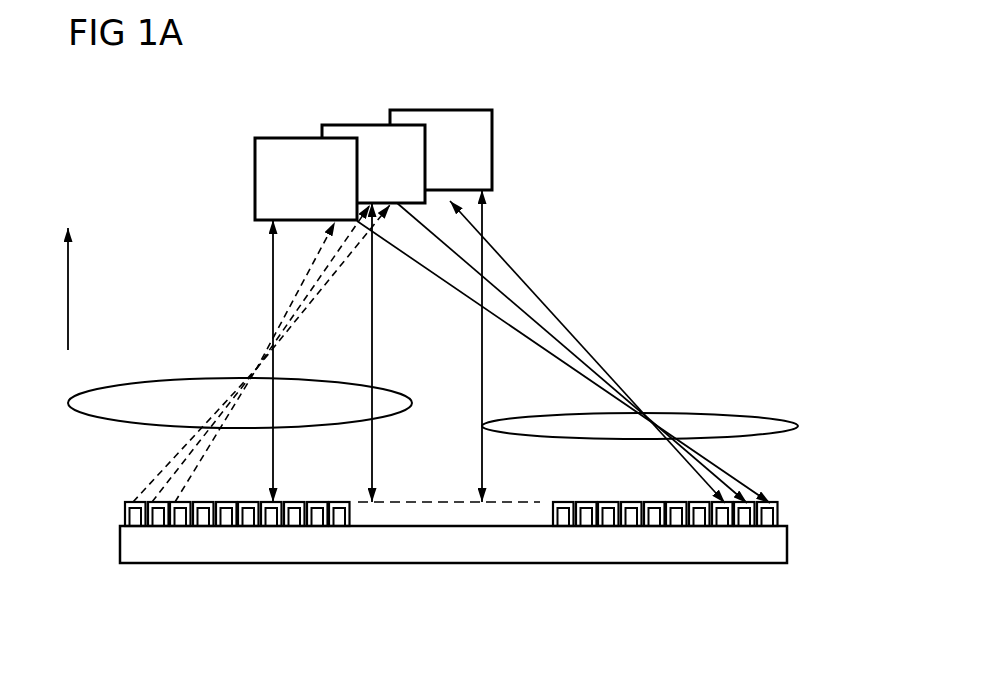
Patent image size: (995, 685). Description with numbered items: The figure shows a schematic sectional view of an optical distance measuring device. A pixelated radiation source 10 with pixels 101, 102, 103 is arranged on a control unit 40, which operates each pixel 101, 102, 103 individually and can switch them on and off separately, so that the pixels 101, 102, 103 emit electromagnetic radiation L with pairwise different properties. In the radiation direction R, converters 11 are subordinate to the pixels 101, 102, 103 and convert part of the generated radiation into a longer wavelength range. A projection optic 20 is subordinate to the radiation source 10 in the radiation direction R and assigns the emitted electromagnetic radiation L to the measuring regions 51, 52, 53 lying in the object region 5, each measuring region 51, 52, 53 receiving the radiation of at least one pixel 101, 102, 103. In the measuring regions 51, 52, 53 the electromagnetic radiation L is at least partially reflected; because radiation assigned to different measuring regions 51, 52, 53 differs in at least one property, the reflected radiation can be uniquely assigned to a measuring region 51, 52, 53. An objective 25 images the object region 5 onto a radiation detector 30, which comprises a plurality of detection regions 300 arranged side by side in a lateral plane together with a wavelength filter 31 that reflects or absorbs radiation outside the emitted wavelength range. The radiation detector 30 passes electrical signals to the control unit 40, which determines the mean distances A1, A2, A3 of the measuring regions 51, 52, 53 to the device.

The object region 5 is at (492, 56).
The measuring region 51 is at (307, 150).
The measuring region 52 is at (375, 133).
The measuring region 53 is at (442, 123).
The mean distance A1 is at (272, 283).
The mean distance A2 is at (372, 350).
The mean distance A3 is at (483, 378).
The radiation direction R is at (70, 297).
The projection optic 20 is at (195, 378).
The objective 25 is at (700, 412).
The electromagnetic radiation L is at (165, 470).
The converter 11 is at (252, 528).
The pixel 101 is at (132, 528).
The pixel 102 is at (157, 528).
The pixel 103 is at (182, 528).
The pixelated radiation source 10 is at (263, 614).
The radiation detector 30 is at (695, 611).
The detection regions 300 is at (630, 528).
The wavelength filter 31 is at (678, 528).
The control unit 40 is at (455, 564).